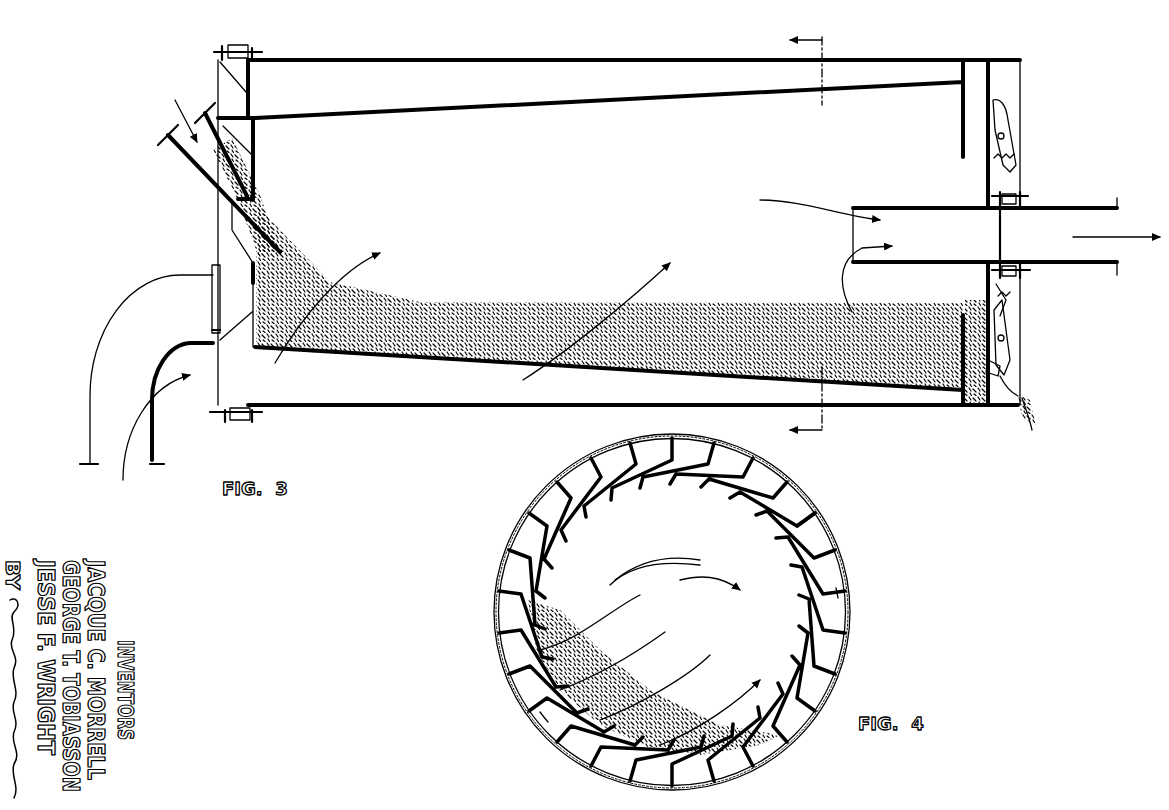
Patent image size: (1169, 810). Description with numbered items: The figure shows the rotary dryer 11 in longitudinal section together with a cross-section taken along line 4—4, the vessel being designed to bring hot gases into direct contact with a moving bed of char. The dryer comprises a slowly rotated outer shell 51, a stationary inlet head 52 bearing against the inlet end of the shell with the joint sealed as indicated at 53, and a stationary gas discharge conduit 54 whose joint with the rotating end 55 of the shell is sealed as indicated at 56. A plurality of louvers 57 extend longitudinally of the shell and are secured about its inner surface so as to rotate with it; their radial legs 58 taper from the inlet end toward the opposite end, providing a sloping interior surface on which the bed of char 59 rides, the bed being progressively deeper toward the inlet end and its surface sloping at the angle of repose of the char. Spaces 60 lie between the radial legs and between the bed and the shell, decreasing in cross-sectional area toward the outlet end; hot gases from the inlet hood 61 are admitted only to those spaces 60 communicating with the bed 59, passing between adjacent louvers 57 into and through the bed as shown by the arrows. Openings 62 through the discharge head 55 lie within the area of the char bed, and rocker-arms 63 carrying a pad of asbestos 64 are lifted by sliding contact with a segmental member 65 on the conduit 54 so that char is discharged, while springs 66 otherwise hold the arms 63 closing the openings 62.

In FIG. 3, the dryer 11 is at (396, 418).
In FIG. 3, the outer shell 51 is at (604, 60).
In FIG. 4, the outer shell 51 is at (509, 551).
In FIG. 3, the stationary inlet head 52 is at (230, 92).
In FIG. 3, the seal 53 is at (262, 52).
In FIG. 3, the stationary gas discharge conduit 54 is at (1072, 208).
In FIG. 3, the rotating end of the shell 55 is at (995, 182).
In FIG. 3, the seal 56 is at (1008, 273).
In FIG. 3, the louvers 57 is at (596, 100).
In FIG. 4, the louvers 57 is at (806, 546).
In FIG. 4, the radial legs 58 is at (800, 502).
In FIG. 3, the bed of char 59 is at (413, 300).
In FIG. 4, the bed of char 59 is at (570, 636).
In FIG. 3, the spaces 60 is at (497, 395).
In FIG. 4, the spaces 60 is at (840, 590).
In FIG. 3, the hot gas inlet hood 61 is at (160, 418).
In FIG. 3, the openings 62 is at (986, 364).
In FIG. 3, the rocker-arms 63 is at (1006, 348).
In FIG. 3, the pad of asbestos 64 is at (1002, 378).
In FIG. 3, the segmental member 65 is at (1002, 300).
In FIG. 3, the springs 66 is at (1014, 149).
In FIG. 3, the section line 4- 4 is at (817, 235).